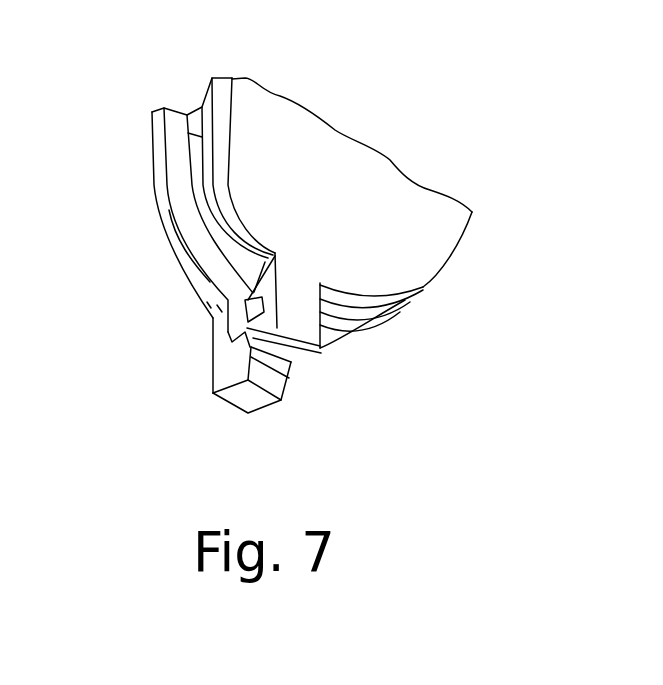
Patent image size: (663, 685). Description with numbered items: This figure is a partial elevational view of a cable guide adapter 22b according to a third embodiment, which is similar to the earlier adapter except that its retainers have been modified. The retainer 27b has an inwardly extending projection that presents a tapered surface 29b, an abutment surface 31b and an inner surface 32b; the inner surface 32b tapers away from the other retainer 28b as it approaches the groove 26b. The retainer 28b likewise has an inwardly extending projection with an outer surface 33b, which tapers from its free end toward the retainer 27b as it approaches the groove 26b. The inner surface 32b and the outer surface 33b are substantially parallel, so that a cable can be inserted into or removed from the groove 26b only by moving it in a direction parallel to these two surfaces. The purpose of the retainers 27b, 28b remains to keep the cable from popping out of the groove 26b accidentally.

The cable guide adapter 22b is at (332, 80).
The groove 26b is at (203, 137).
The retainer 27b is at (203, 375).
The retainer 28b is at (343, 343).
The tapered surface 29b is at (273, 380).
The abutment surface 31b is at (247, 298).
The inner surface 32b is at (295, 355).
The outer surface 33b is at (278, 296).